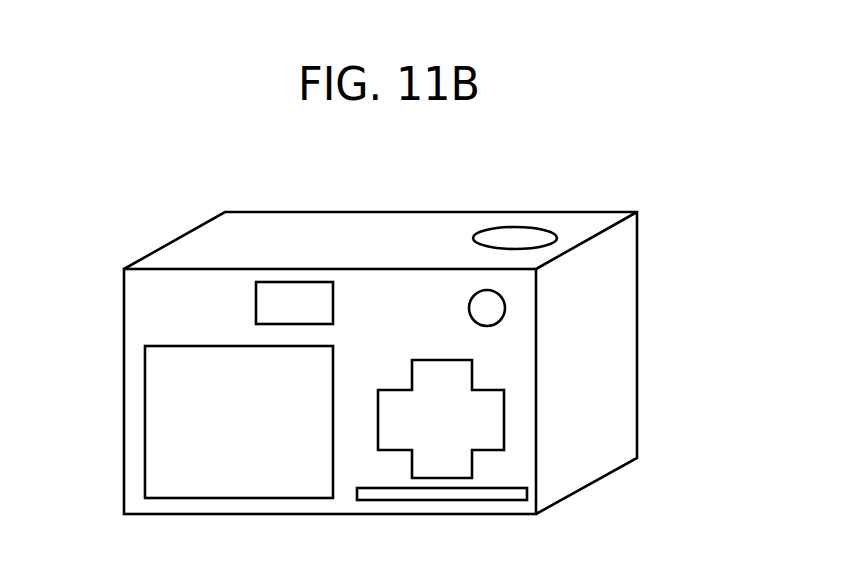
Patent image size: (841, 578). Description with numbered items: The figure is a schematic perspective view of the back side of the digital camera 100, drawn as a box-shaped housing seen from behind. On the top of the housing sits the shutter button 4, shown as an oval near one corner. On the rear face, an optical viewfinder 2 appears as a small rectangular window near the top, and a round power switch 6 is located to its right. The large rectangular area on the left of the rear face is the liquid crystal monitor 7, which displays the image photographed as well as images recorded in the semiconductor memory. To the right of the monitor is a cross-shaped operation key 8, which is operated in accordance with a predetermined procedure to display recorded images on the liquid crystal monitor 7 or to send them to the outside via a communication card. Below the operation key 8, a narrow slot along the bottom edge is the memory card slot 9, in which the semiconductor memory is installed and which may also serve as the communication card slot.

The digital camera 100 is at (588, 158).
The optical viewfinder 2 is at (293, 297).
The shutter button 4 is at (513, 234).
The power switch 6 is at (496, 304).
The liquid crystal monitor 7 is at (160, 420).
The operation key 8 is at (493, 418).
The memory card slot 9 is at (490, 494).